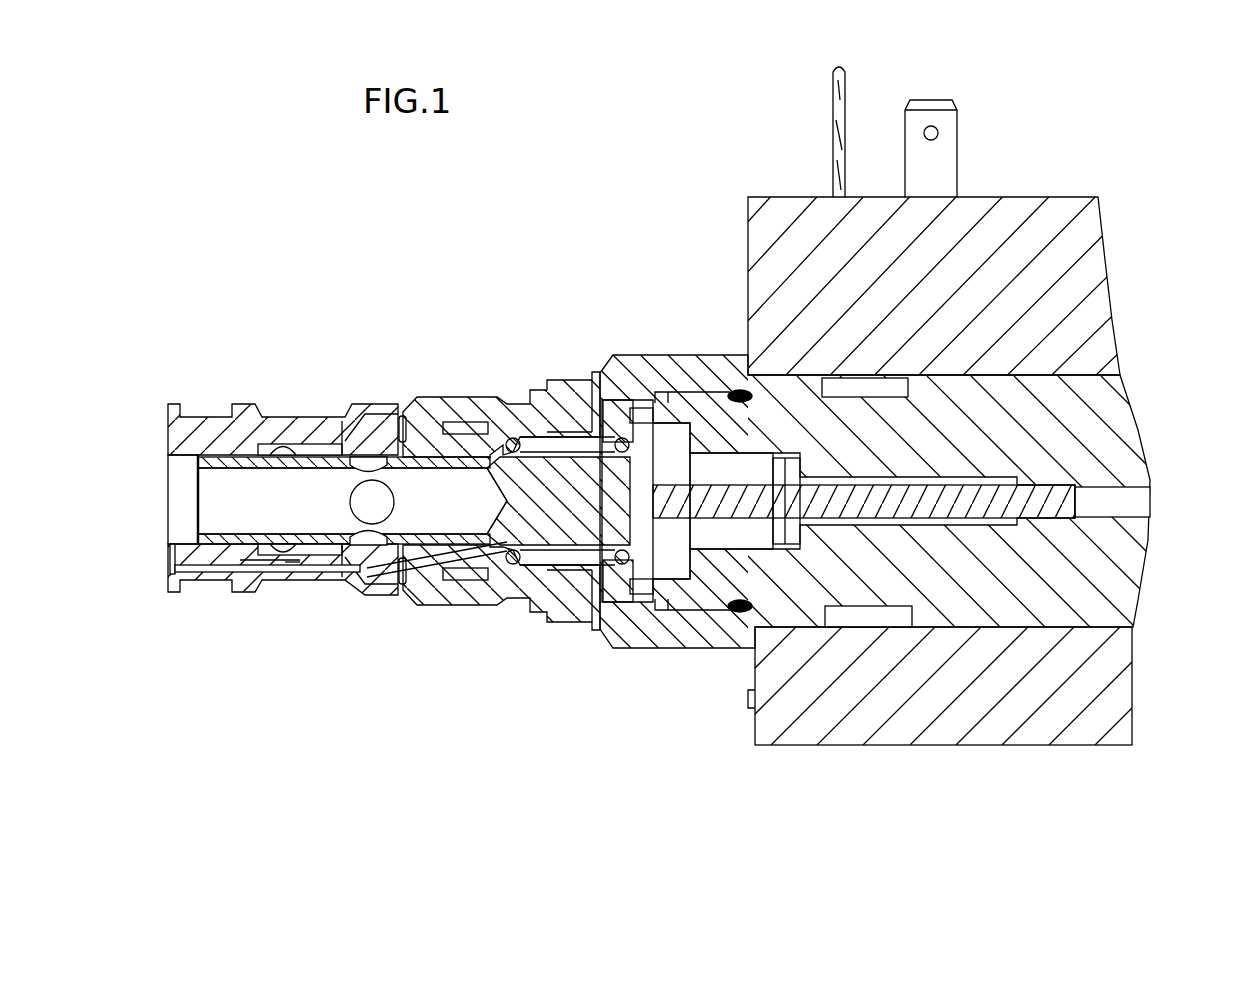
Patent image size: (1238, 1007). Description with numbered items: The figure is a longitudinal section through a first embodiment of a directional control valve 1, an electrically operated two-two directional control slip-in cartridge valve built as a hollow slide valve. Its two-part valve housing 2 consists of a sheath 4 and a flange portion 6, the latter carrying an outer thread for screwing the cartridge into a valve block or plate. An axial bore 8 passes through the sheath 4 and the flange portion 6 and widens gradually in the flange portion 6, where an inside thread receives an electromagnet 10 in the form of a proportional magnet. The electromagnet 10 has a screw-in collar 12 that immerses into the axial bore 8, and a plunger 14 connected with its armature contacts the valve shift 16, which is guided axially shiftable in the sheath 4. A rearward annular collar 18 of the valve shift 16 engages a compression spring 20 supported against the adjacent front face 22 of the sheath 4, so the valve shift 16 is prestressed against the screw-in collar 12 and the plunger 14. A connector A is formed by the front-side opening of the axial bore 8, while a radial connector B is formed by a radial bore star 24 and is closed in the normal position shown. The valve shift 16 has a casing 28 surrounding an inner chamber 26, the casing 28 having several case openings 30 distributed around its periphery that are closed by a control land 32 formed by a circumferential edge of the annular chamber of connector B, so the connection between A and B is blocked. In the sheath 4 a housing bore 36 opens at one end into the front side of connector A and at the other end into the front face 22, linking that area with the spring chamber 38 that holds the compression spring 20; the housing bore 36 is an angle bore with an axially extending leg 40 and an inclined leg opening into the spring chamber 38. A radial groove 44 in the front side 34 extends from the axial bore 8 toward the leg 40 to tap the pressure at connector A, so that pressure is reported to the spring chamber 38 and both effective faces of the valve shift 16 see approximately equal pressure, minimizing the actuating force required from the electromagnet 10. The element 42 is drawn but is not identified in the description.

The directional control valve 1 is at (775, 513).
The valve housing 2 is at (456, 396).
The sheath 4 is at (278, 447).
The flange portion 6 is at (667, 355).
The axial bore 8 is at (197, 575).
The electromagnet 10 is at (1022, 213).
The screw-in collar 12 is at (1135, 628).
The plunger 14 is at (970, 497).
The valve shift 16 is at (528, 510).
The annular collar 18 is at (640, 573).
The compression spring 20 is at (568, 553).
The front face 22 is at (514, 438).
The radial bore star 24 is at (292, 447).
The inner chamber 26 is at (352, 501).
The casing 28 is at (437, 545).
The case openings 30 is at (368, 512).
The control land 32 is at (300, 447).
The front side 34 is at (151, 420).
The housing bore 36 is at (248, 583).
The spring chamber 38 is at (565, 380).
The leg 40 is at (221, 565).
The pin 42 is at (405, 415).
The radial groove 44 is at (170, 555).
The connector A is at (187, 502).
The radial connector B is at (290, 568).